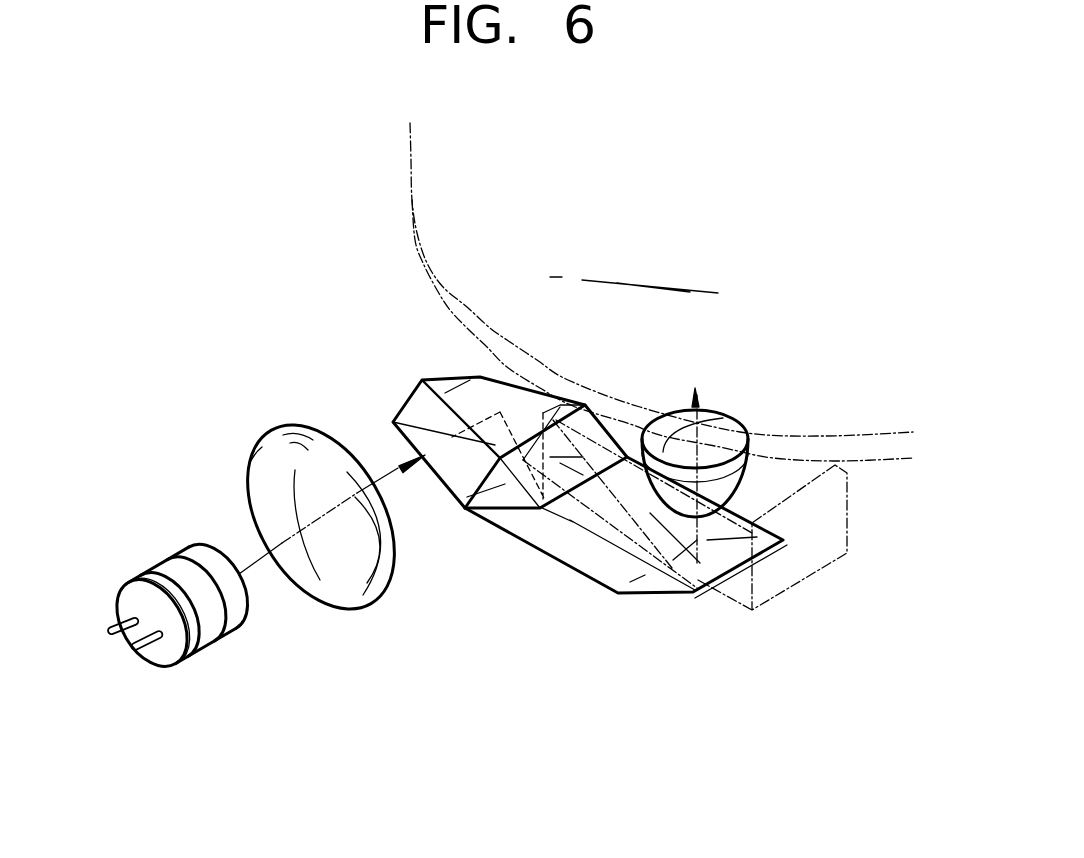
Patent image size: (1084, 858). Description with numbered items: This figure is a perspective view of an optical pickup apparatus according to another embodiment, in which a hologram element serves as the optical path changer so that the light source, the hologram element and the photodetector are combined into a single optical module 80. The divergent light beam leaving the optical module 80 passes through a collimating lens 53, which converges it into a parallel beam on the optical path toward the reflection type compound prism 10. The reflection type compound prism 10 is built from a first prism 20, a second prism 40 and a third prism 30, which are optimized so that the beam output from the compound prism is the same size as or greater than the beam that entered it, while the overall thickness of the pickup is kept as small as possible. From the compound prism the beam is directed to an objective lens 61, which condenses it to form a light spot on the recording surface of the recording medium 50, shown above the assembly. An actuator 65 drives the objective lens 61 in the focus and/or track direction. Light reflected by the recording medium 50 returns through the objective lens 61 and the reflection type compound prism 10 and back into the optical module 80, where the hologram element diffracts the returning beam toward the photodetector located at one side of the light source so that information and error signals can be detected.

The reflection type compound prism 10 is at (376, 377).
The first prism 20 is at (472, 397).
The third prism 30 is at (512, 495).
The second prism 40 is at (592, 560).
The recording medium 50 is at (411, 192).
The collimating lens 53 is at (357, 610).
The objective lens 61 is at (747, 483).
The actuator 65 is at (787, 592).
The optical module 80 is at (234, 665).